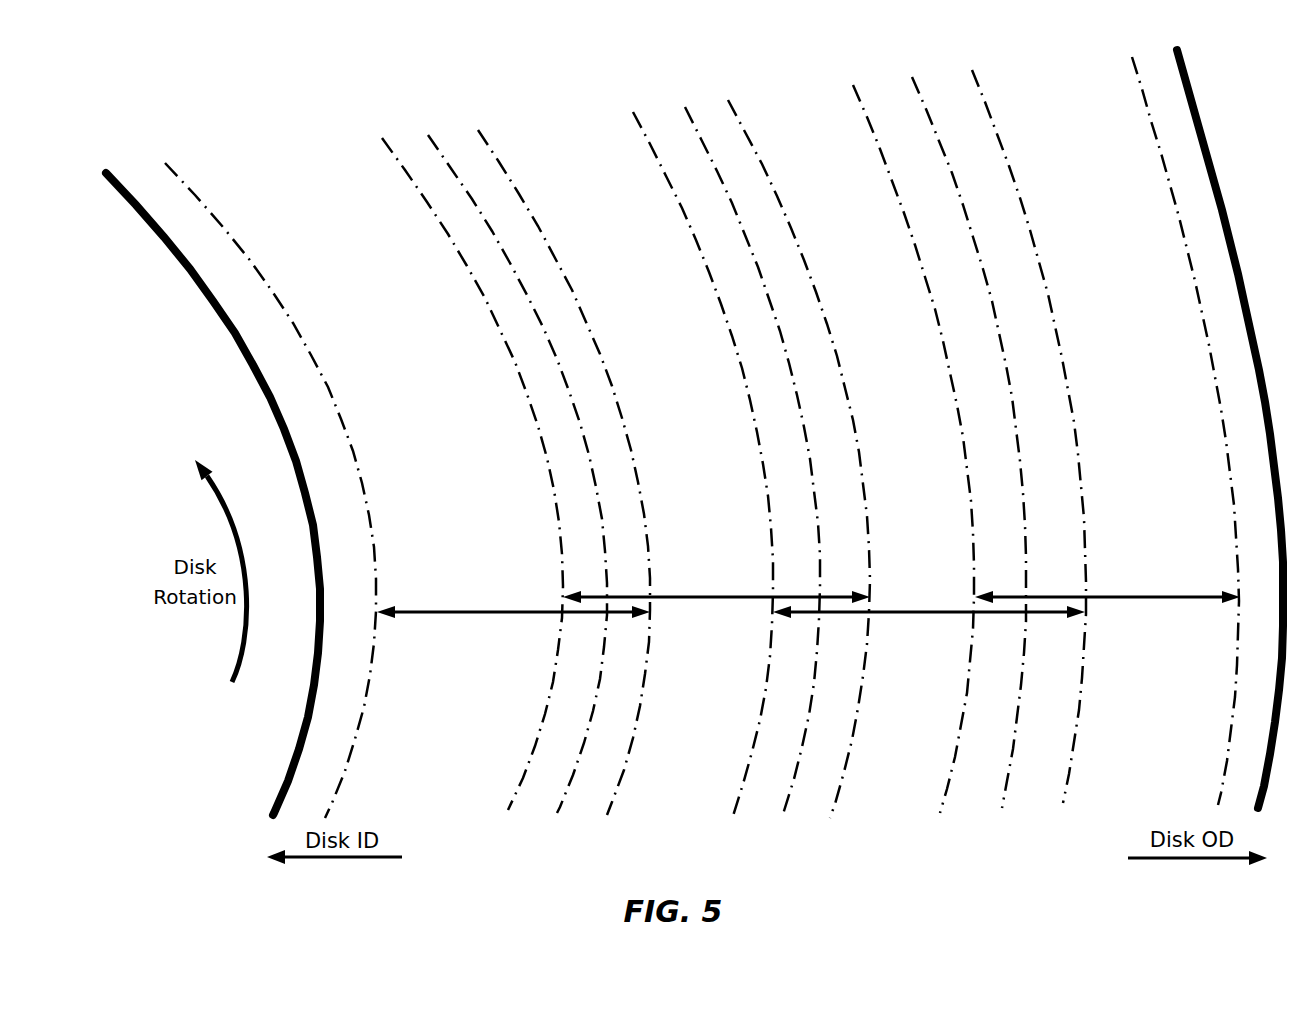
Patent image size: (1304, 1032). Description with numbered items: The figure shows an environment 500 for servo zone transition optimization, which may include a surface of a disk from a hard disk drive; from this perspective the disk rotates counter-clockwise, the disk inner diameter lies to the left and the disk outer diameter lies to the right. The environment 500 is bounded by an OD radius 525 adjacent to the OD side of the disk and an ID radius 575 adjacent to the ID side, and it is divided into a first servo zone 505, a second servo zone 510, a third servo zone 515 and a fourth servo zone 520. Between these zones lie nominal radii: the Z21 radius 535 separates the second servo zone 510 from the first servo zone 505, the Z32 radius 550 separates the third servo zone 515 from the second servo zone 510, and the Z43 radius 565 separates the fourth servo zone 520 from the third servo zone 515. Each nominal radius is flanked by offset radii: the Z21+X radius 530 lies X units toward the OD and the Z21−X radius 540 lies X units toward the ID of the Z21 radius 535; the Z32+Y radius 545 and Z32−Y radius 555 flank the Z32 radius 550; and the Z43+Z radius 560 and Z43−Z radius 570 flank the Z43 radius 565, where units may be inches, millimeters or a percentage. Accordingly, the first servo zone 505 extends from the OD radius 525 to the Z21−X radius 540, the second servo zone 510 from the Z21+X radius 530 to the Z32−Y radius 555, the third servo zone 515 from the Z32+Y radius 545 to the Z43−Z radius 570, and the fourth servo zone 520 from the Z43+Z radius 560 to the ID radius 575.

The environment 500 is at (168, 90).
The first servo zone 505 is at (1166, 599).
The second servo zone 510 is at (936, 614).
The third servo zone 515 is at (723, 599).
The fourth servo zone 520 is at (503, 614).
The OD radius 525 is at (1148, 97).
The Z21+X radius 530 is at (993, 117).
The Z21 radius 535 is at (915, 86).
The Z21−X radius 540 is at (873, 129).
The Z32+Y radius 545 is at (753, 141).
The Z32 radius 550 is at (690, 116).
The Z32−Y radius 555 is at (657, 152).
The Z43+Z radius 560 is at (507, 165).
The Z43 radius 565 is at (437, 143).
The Z43−Z radius 570 is at (413, 172).
The ID radius 575 is at (228, 224).